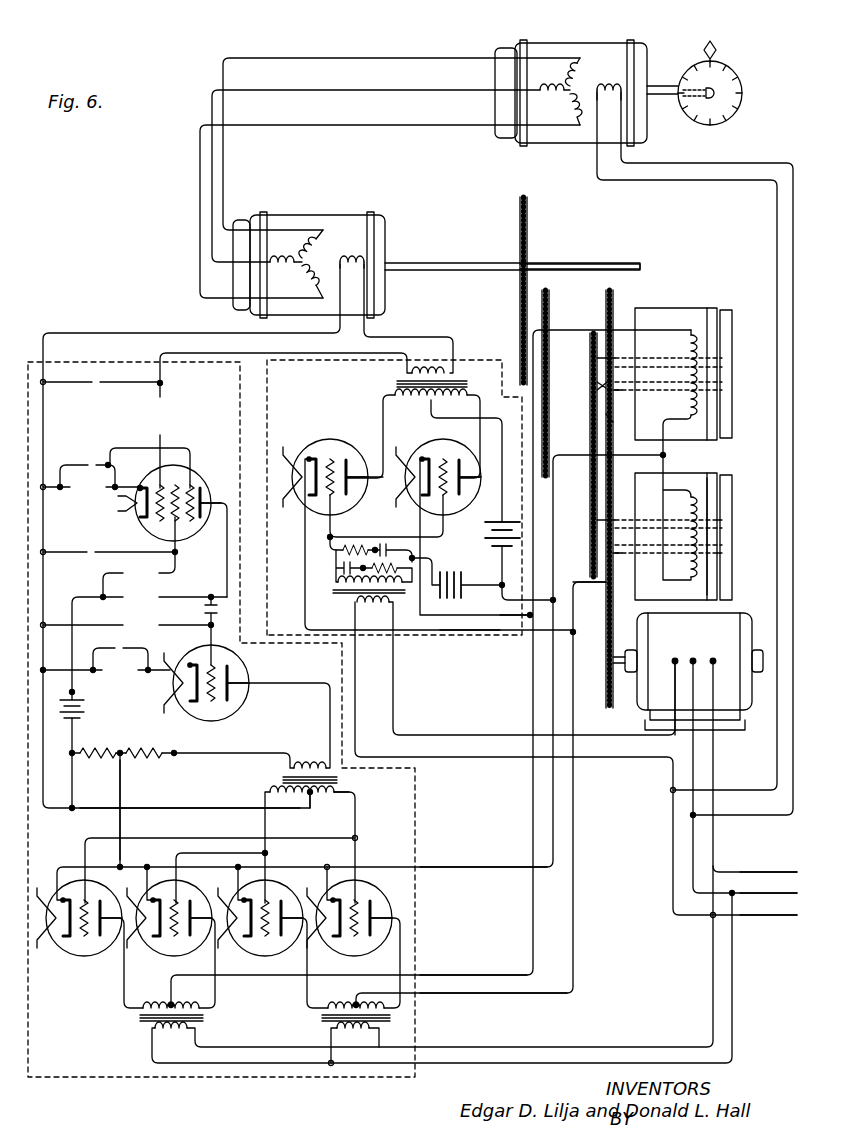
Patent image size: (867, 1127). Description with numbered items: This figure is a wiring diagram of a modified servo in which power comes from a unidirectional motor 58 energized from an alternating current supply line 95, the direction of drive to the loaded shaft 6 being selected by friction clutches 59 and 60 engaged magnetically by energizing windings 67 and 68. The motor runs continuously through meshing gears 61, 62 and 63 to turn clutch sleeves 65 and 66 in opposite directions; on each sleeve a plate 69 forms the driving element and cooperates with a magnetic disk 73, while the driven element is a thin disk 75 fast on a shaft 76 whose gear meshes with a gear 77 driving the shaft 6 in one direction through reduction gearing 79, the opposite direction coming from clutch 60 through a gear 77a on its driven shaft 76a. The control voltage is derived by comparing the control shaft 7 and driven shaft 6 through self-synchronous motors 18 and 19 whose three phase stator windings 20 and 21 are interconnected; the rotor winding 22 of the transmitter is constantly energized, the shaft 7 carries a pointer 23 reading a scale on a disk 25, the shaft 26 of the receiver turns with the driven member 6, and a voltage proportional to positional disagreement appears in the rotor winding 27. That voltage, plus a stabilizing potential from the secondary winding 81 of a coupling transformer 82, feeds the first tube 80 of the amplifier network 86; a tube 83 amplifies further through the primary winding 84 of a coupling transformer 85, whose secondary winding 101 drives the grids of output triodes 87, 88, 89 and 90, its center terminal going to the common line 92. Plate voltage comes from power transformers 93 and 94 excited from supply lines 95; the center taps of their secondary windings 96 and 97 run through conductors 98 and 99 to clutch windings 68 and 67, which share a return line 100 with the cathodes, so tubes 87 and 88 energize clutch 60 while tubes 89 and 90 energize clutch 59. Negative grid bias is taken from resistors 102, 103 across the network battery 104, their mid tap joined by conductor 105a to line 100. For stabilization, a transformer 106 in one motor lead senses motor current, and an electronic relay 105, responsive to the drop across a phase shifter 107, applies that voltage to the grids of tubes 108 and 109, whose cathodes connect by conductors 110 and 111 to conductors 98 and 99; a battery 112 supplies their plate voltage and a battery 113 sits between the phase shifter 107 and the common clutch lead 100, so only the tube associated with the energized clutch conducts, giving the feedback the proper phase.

The driven shaft 6 is at (460, 267).
The control shaft 7 is at (665, 92).
The self-synchronous motor 18 is at (586, 50).
The self-synchronous motor 19 is at (296, 215).
The three phase stator winding 20 is at (558, 92).
The three phase stator winding 21 is at (294, 264).
The rotor winding 22 is at (596, 160).
The pointer 23 is at (718, 50).
The disk 25 is at (745, 90).
The shaft 26 is at (590, 268).
The single phase rotor winding 27 is at (345, 260).
The unidirectional motor 58 is at (712, 626).
The friction clutch 59 is at (722, 472).
The friction clutch 60 is at (720, 305).
The gear 61 is at (607, 676).
The gear 62 is at (607, 592).
The gear 63 is at (613, 418).
The sleeve 65 is at (626, 553).
The sleeve 66 is at (625, 392).
The winding 67 is at (685, 510).
The winding 68 is at (688, 334).
The plate 69 is at (712, 568).
The magnetic disk 73 is at (733, 541).
The thin disk 75 is at (733, 324).
The shaft 76 is at (600, 546).
The driven shaft 76a is at (597, 392).
The gear 77 is at (590, 483).
The gear 77a is at (597, 358).
The reduction gearing 79 is at (520, 330).
The first tube 80 is at (223, 468).
The secondary winding 81 is at (430, 370).
The coupling transformer 82 is at (462, 385).
The tube 83 is at (246, 674).
The primary winding 84 is at (319, 751).
The coupling transformer 85 is at (280, 779).
The multi-stage amplifier and electronic control network 86 is at (70, 1077).
The triode tube 87 is at (82, 956).
The triode tube 88 is at (168, 956).
The triode tube 89 is at (252, 956).
The triode tube 90 is at (340, 956).
The common line 92 is at (105, 808).
The power transformer 93 is at (140, 1018).
The power transformer 94 is at (322, 1018).
The alternating current supply line 95 is at (762, 886).
The secondary winding 96 is at (201, 992).
The secondary winding 97 is at (336, 992).
The conductor 98 is at (472, 982).
The conductor 99 is at (472, 993).
The return line 100 is at (470, 867).
The secondary winding 101 is at (331, 810).
The resistor 102 is at (98, 767).
The resistor 103 is at (142, 758).
The network battery 104 is at (91, 707).
The electronic relay 105 is at (422, 636).
The conductor 105a is at (122, 790).
The transformer 106 is at (353, 599).
The phase shifter 107 is at (372, 548).
The vacuum tube 108 is at (351, 492).
The vacuum tube 109 is at (413, 500).
The conductor 110 is at (462, 632).
The conductor 111 is at (517, 632).
The battery 112 is at (485, 540).
The battery 113 is at (468, 575).